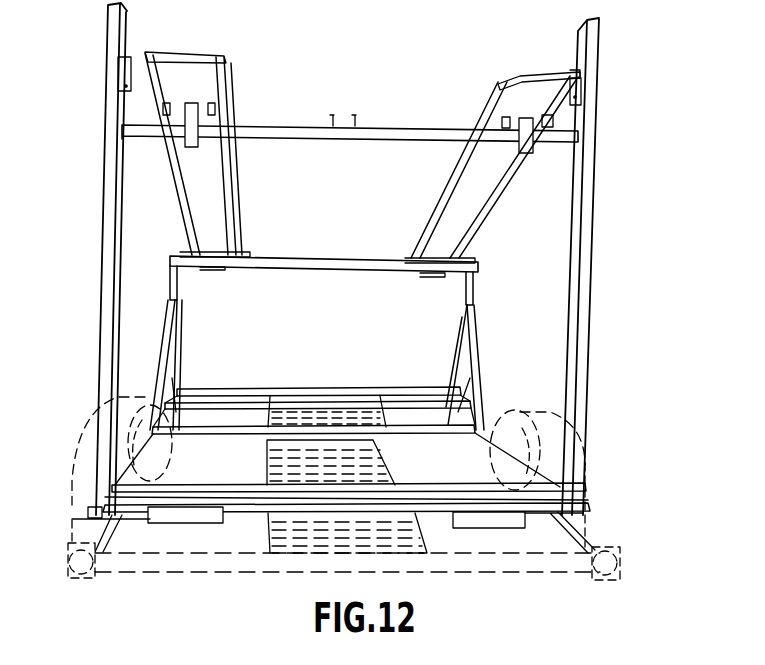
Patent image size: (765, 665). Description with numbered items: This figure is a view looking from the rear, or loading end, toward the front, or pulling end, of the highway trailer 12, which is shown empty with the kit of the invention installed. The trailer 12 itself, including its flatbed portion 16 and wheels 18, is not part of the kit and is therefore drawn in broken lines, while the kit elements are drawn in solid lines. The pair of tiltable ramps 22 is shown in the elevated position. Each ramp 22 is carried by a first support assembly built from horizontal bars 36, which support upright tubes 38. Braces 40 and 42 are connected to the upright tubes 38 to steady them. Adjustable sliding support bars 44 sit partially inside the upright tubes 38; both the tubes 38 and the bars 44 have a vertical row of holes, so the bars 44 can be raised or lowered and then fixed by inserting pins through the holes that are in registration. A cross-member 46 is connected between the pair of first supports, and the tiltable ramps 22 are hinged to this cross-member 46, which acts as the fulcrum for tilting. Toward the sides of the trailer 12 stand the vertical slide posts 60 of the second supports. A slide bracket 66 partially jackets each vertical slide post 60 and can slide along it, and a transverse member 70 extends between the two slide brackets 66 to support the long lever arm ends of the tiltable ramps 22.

The highway trailer 12 is at (612, 250).
The flatbed portion 16 is at (587, 523).
The wheels 18 is at (150, 403).
The tiltable ramps 22 is at (237, 192).
The horizontal bars 36 is at (300, 391).
The upright tubes 38 is at (173, 375).
The brace 40 is at (178, 357).
The brace 42 is at (163, 383).
The adjustable sliding support bars 44 is at (177, 283).
The cross-member 46 is at (368, 272).
The vertical slide post 60 is at (110, 27).
The slide bracket 66 is at (120, 73).
The transverse member 70 is at (417, 147).